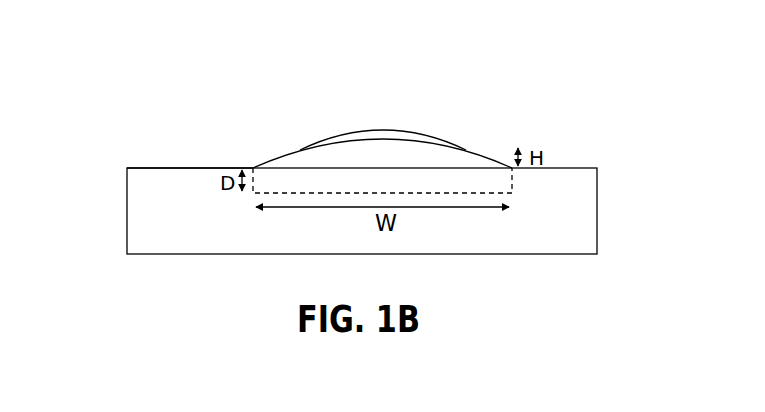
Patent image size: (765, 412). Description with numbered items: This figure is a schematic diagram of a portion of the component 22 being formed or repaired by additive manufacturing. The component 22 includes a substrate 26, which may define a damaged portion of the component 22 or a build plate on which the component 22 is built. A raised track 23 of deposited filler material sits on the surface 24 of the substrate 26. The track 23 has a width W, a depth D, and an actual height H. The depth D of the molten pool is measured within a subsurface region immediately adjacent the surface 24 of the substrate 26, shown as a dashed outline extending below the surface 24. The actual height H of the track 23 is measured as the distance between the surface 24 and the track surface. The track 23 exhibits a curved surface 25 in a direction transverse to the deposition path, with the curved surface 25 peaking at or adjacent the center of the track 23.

The component 22 is at (644, 70).
The track 23 is at (448, 134).
The surface 24 is at (160, 168).
The curved surface 25 is at (381, 138).
The substrate 26 is at (126, 190).